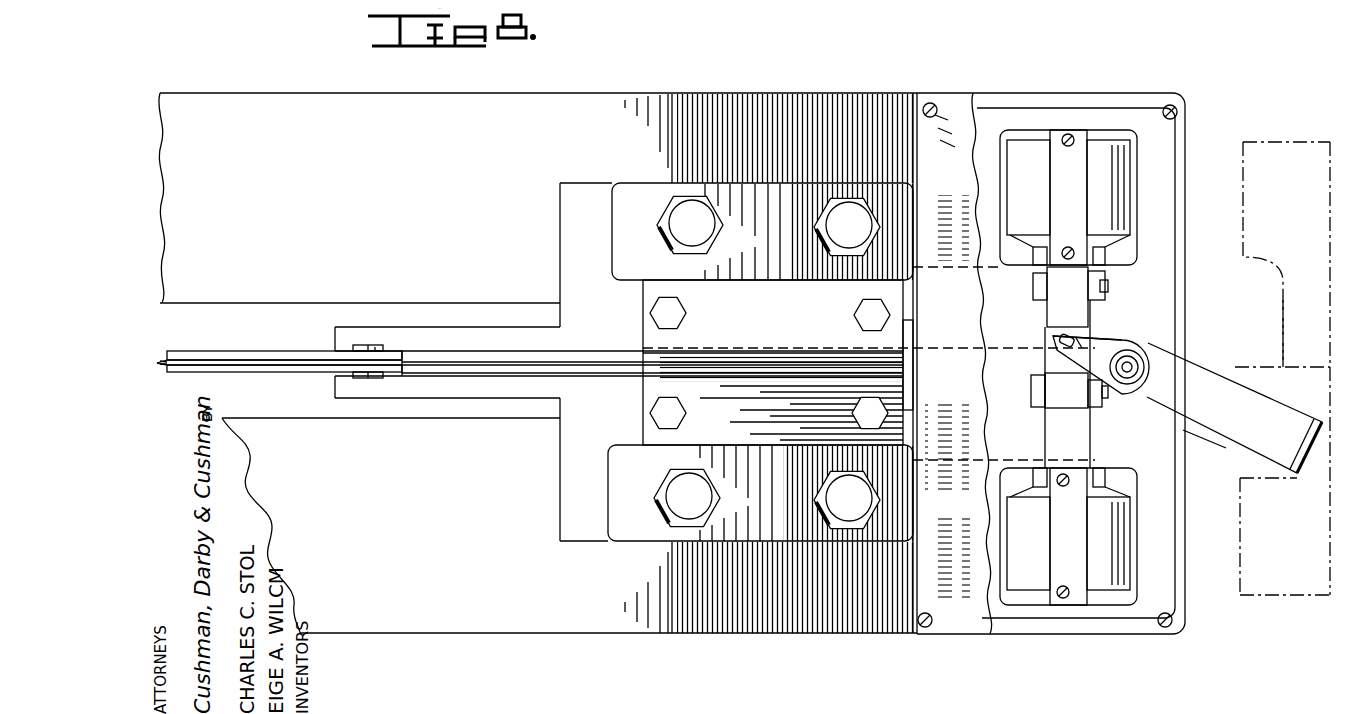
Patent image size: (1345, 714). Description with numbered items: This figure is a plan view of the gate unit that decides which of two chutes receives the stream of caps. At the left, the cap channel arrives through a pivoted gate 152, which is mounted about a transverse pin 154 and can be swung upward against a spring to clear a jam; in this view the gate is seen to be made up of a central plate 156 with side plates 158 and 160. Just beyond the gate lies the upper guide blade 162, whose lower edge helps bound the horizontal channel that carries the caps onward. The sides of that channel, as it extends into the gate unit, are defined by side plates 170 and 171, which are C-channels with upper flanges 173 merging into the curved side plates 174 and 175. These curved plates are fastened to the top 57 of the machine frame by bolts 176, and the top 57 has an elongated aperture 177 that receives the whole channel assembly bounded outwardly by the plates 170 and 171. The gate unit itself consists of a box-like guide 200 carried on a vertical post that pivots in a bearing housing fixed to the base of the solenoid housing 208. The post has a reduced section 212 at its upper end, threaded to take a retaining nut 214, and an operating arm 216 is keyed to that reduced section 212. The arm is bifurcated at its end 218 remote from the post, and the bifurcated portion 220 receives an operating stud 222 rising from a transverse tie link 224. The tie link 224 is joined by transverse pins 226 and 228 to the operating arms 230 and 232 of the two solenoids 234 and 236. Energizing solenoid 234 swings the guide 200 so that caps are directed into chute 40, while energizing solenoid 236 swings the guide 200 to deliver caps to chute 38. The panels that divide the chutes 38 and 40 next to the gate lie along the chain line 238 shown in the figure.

The top of frame 57 is at (375, 93).
The elongated aperture 177 is at (318, 303).
The side plate 171 is at (437, 327).
The side plate 170 is at (453, 398).
The side plate of gate 160 is at (278, 351).
The side plate of gate 158 is at (240, 372).
The gate 152 is at (226, 360).
The central plate 156 is at (162, 352).
The transverse pin 154 is at (368, 345).
The upper guide blade 162 is at (443, 362).
The curved side plate 175 is at (712, 183).
The curved side plate 174 is at (700, 545).
The upper flange 173 is at (628, 280).
The bolts 176 is at (722, 232).
The solenoid housing 208 is at (960, 620).
The solenoid 236 is at (1115, 186).
The solenoid 234 is at (1118, 560).
The transverse pin 228 is at (1106, 285).
The operating arm of solenoid 232 is at (1036, 268).
The operating arm of solenoid 230 is at (1092, 440).
The transverse tie link 224 is at (1034, 378).
The transverse pin 226 is at (1098, 405).
The bifurcated end of operating arm 218 is at (1052, 337).
The operating stud 222 is at (1060, 344).
The bifurcated portion 220 is at (1078, 340).
The reduced section of post 212 is at (1132, 376).
The operating arm 216 is at (1116, 343).
The retaining nut 214 is at (1148, 392).
The box-like guide 200 is at (1226, 448).
The chute 40 is at (1252, 142).
The chain line 238 is at (1242, 367).
The chute 38 is at (1252, 598).